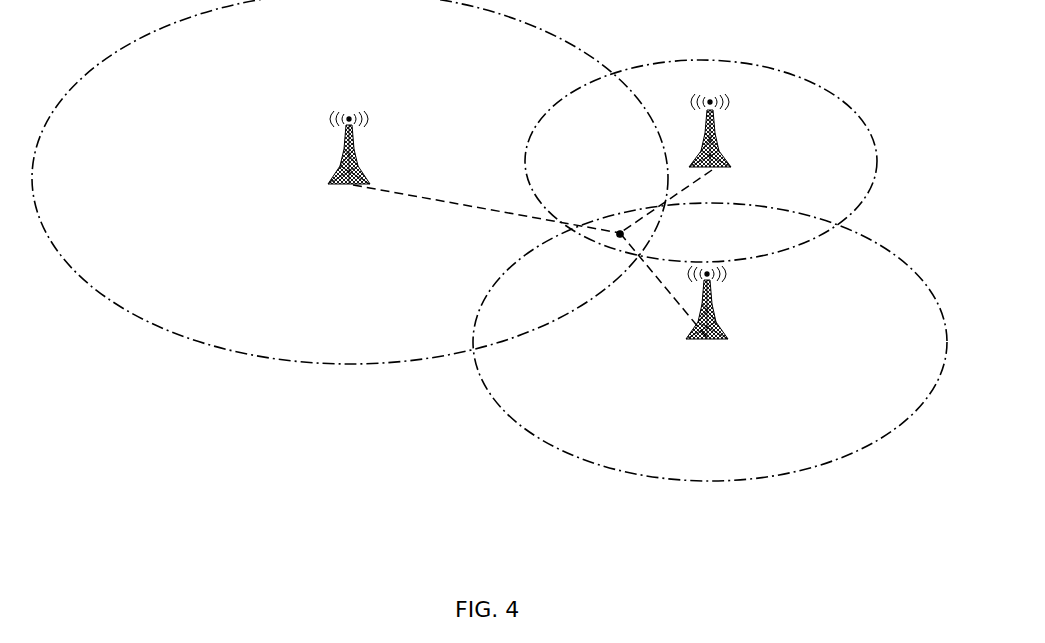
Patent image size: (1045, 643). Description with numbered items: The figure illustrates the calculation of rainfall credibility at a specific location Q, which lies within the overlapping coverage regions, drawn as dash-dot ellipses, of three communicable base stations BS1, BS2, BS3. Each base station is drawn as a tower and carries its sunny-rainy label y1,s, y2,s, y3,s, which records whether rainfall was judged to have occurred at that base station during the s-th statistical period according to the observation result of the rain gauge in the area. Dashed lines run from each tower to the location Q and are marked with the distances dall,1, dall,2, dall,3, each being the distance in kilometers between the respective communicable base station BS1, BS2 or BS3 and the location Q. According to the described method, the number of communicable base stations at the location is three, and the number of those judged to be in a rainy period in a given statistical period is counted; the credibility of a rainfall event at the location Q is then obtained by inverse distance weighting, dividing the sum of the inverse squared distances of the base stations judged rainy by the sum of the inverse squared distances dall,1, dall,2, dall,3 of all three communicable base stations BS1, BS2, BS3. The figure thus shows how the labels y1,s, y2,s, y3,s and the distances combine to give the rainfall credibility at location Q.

The first communicable base station BS1 is at (329, 156).
The second communicable base station BS2 is at (731, 319).
The third communicable base station BS3 is at (734, 140).
The sunny-rainy label of the first base station y1,s is at (349, 106).
The sunny-rainy label of the second base station y2,s is at (707, 264).
The sunny-rainy label of the third base station y3,s is at (710, 93).
The distance between the first communicable base station and the location dall,1 is at (486, 212).
The distance between the second communicable base station and the location dall,2 is at (661, 286).
The distance between the third communicable base station and the location dall,3 is at (664, 198).
The specific location Q is at (616, 223).